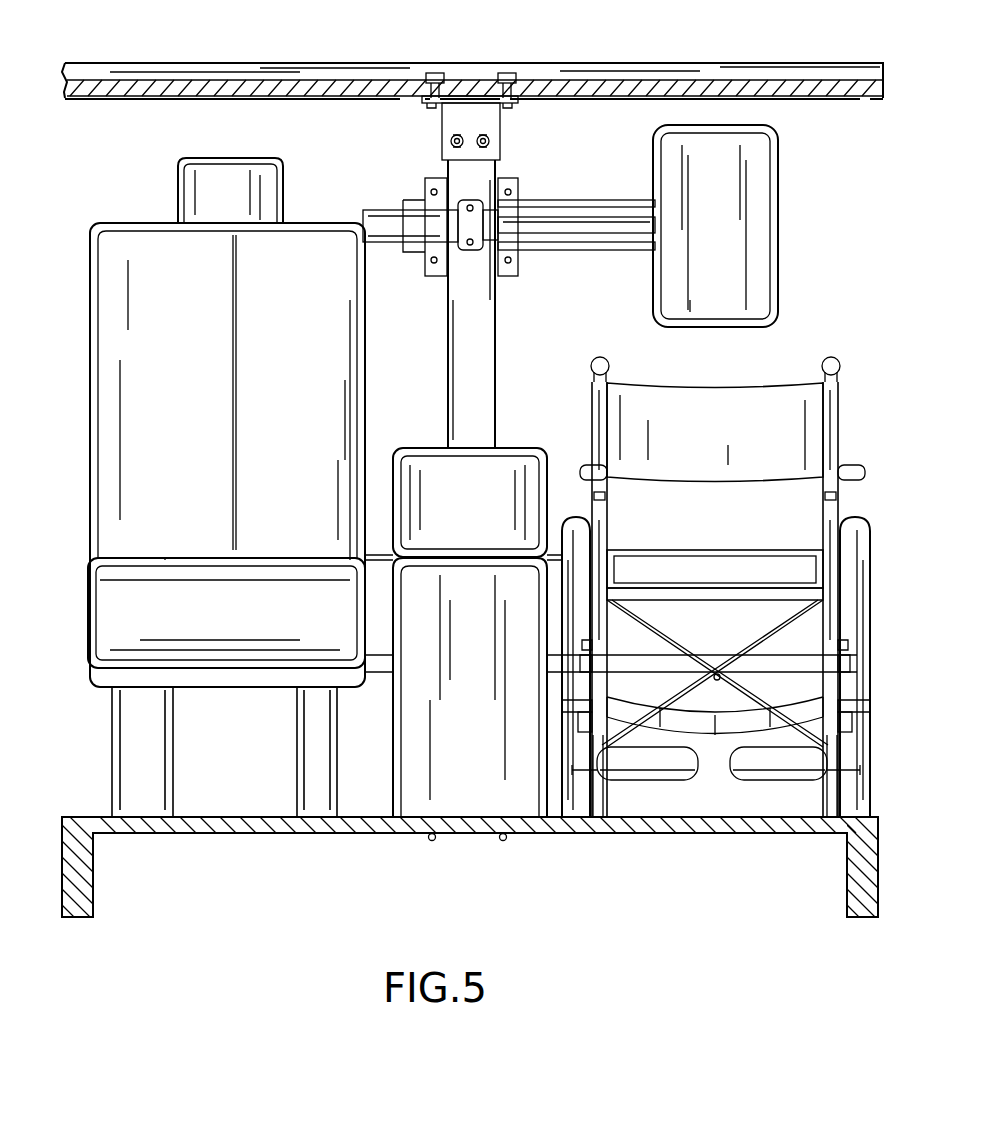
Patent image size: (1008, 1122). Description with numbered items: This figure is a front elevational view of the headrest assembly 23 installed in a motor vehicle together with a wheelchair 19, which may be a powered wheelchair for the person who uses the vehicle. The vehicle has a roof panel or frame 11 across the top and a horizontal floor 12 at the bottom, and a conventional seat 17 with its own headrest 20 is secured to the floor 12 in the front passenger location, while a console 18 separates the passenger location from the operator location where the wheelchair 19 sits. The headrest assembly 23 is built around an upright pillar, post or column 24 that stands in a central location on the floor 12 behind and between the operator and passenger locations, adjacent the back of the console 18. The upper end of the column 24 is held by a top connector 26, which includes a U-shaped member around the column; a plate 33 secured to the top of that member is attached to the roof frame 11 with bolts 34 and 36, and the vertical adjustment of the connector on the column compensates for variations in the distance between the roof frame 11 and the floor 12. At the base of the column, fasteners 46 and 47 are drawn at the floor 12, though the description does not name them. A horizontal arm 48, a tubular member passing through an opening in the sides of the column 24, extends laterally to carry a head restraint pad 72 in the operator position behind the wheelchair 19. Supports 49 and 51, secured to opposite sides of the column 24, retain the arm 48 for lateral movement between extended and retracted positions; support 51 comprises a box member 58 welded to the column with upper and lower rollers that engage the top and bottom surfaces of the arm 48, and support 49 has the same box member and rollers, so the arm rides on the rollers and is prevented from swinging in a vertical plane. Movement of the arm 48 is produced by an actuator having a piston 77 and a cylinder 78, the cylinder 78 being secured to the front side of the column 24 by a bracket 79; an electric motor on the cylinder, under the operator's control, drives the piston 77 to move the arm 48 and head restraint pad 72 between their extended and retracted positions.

The roof panel or frame 11 is at (318, 93).
The horizontal floor 12 is at (240, 822).
The conventional seat 17 is at (110, 420).
The console 18 is at (500, 470).
The wheelchair 19 is at (815, 435).
The headrest 20 is at (205, 170).
The headrest assembly 23 is at (602, 128).
The upright pillar, post or column 24 is at (460, 340).
The top connector 26 is at (424, 135).
The plate 33 is at (480, 100).
The bolt 34 is at (440, 75).
The bolt 36 is at (512, 73).
The floor bolt 46 is at (505, 840).
The floor bolt 47 is at (432, 840).
The horizontal arm 48 is at (620, 240).
The support 49 is at (515, 280).
The support 51 is at (423, 280).
The box member 58 is at (432, 253).
The head restraint pad 72 is at (760, 235).
The piston 77 is at (598, 225).
The cylinder 78 is at (379, 222).
The bracket 79 is at (475, 200).